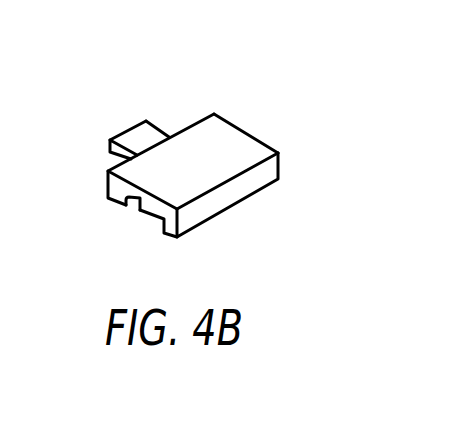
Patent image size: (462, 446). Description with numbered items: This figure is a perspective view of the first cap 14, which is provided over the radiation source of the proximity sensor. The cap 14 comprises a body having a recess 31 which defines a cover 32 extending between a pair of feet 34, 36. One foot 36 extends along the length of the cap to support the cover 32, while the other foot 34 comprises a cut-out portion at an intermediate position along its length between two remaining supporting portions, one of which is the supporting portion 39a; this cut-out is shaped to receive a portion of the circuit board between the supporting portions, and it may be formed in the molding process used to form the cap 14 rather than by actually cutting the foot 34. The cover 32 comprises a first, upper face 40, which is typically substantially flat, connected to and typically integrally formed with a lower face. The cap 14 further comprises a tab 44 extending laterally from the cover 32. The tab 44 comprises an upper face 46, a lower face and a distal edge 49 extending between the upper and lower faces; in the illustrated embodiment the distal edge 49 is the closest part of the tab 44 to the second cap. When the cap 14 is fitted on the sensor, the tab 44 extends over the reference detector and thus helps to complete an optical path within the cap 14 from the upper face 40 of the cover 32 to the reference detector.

The first cap 14 is at (232, 150).
The recess 31 is at (145, 218).
The cover 32 is at (214, 113).
The foot 34 is at (99, 211).
The foot 36 is at (230, 204).
The supporting portion 39a is at (120, 192).
The first, upper face 40 is at (222, 163).
The tab 44 is at (115, 117).
The upper face 46 is at (143, 138).
The distal edge 49 is at (125, 131).